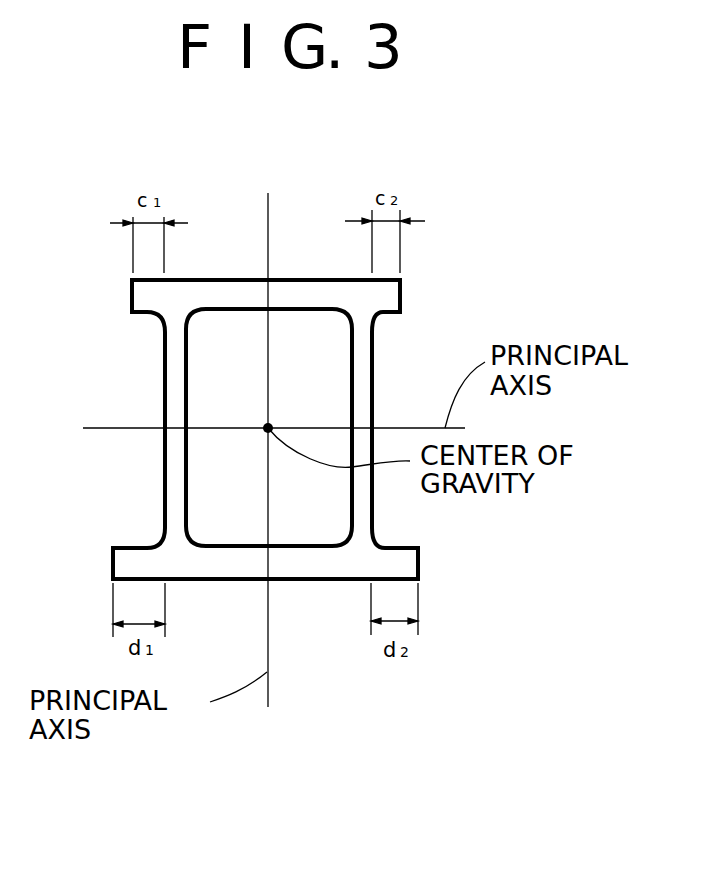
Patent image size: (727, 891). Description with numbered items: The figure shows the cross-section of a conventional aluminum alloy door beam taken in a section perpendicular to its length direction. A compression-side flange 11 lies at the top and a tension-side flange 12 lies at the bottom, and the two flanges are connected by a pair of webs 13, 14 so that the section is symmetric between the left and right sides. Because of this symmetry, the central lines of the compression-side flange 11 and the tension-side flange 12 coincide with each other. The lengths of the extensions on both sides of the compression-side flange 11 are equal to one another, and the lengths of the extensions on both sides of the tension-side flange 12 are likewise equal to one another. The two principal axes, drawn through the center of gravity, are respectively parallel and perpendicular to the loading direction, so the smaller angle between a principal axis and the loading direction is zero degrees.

The compression-side flange 11 is at (312, 280).
The tension-side flange 12 is at (319, 569).
The web 13 is at (165, 360).
The web 14 is at (372, 358).